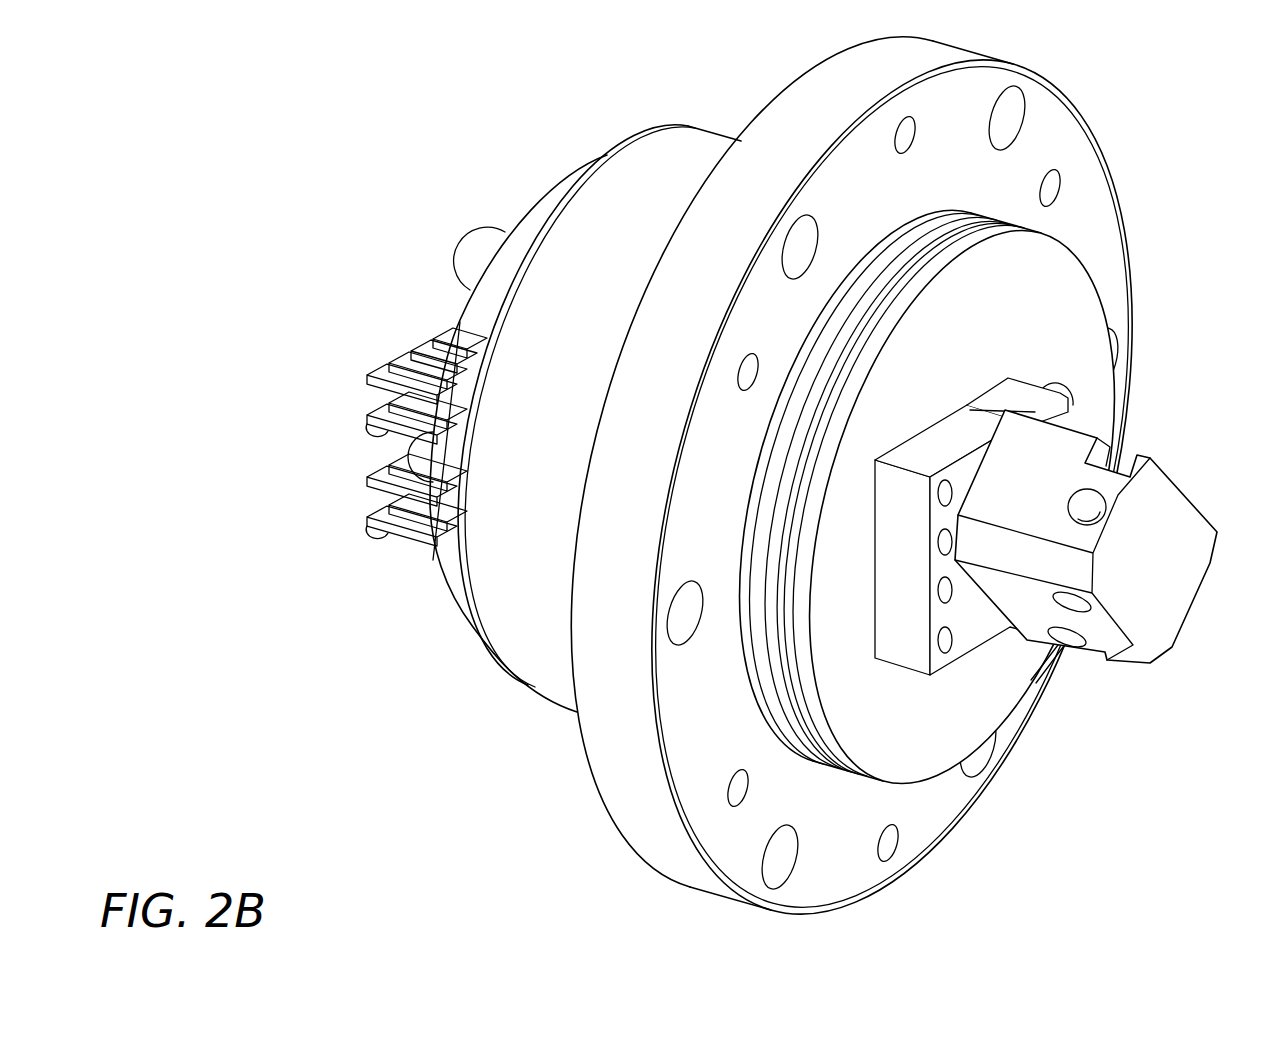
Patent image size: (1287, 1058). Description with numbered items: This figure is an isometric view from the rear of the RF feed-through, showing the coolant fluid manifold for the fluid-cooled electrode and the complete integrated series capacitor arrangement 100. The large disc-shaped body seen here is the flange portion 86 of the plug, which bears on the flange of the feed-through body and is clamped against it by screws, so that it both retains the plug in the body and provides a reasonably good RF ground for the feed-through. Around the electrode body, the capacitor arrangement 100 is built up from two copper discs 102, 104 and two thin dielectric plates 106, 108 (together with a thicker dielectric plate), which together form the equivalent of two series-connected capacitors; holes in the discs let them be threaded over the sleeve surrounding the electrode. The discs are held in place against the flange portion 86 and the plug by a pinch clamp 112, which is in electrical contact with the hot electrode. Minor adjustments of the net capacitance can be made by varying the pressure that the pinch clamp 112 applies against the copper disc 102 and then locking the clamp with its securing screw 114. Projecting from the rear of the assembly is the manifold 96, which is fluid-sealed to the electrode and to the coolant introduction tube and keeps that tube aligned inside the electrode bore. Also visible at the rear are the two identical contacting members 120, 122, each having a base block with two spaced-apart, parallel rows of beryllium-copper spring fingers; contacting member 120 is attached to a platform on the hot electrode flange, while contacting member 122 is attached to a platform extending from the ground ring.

The flange portion 86 is at (745, 543).
The manifold 96 is at (1167, 467).
The integrated series capacitor arrangement 100 is at (864, 442).
The copper disc 102 is at (1060, 268).
The copper disc 104 is at (893, 270).
The thin dielectric plate 106 is at (1010, 218).
The thin dielectric plate 108 is at (777, 707).
The pinch clamp 112 is at (983, 652).
The securing screw 114 is at (1073, 400).
The contacting member 120 is at (355, 387).
The contacting member 122 is at (342, 497).